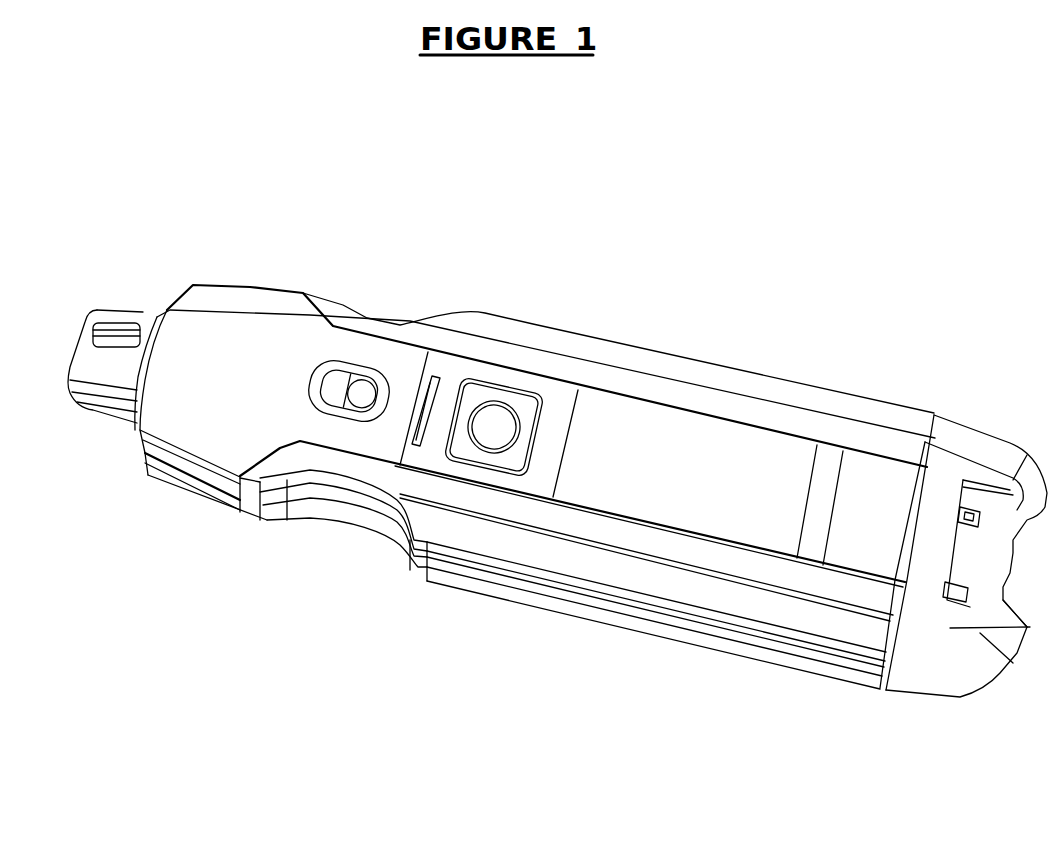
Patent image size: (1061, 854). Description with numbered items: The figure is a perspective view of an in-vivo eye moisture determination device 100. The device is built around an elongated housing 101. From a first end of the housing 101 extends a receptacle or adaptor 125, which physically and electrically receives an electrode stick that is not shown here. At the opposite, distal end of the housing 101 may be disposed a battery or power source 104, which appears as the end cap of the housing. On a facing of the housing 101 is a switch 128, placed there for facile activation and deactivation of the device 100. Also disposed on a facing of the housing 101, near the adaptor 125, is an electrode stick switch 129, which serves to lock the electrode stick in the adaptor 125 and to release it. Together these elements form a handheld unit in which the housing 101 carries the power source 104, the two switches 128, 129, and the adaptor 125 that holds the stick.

The in-vivo eye moisture determination device 100 is at (866, 297).
The elongated housing 101 is at (777, 615).
The battery or power source 104 is at (1007, 563).
The receptacle or adaptor 125 is at (94, 355).
The switch 128 is at (495, 425).
The electrode stick switch 129 is at (343, 386).